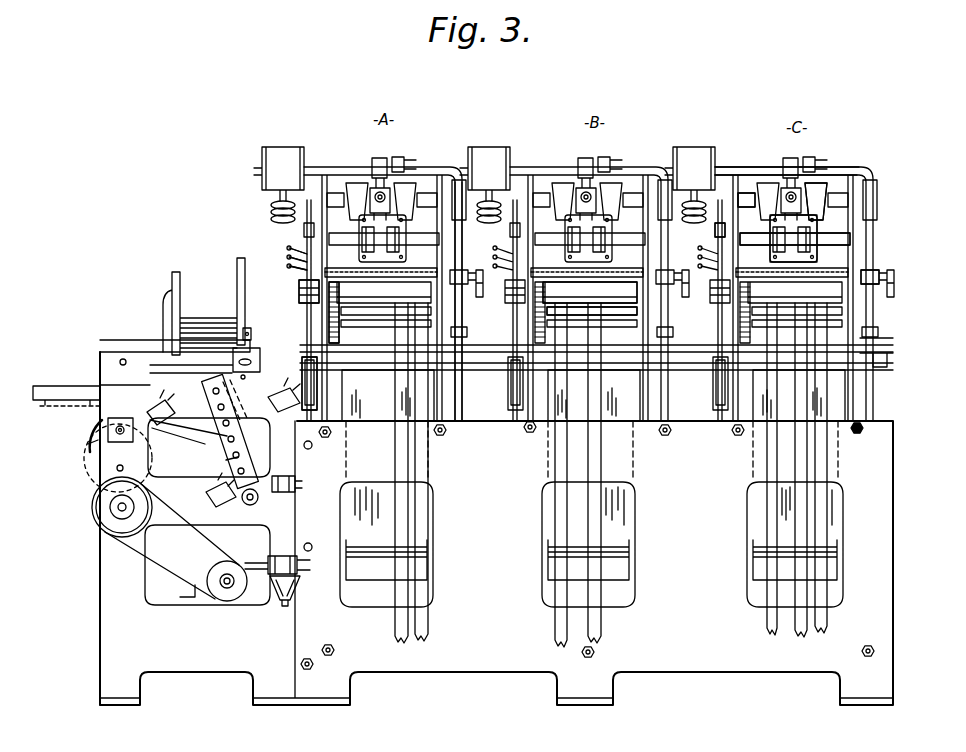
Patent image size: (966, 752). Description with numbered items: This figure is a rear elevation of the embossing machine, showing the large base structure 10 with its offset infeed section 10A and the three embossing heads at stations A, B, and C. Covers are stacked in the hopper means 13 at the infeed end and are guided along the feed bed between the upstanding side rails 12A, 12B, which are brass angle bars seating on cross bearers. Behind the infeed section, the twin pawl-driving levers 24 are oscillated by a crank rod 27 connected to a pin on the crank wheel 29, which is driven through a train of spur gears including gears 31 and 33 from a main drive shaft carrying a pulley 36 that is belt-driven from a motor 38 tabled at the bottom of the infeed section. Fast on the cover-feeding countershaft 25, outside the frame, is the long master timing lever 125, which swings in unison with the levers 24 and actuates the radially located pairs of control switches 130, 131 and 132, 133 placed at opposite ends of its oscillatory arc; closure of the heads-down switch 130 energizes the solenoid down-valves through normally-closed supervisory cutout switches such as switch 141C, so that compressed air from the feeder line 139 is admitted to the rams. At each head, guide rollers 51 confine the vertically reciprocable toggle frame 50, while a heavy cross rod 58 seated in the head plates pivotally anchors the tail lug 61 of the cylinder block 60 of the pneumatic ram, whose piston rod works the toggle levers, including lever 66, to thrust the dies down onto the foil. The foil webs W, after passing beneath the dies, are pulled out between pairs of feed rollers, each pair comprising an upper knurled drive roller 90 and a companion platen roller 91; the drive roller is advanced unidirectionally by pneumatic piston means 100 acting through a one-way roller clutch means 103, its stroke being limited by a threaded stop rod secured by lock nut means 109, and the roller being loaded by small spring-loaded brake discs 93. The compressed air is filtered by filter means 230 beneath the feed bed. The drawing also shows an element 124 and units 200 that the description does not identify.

The base structure 10 is at (492, 549).
The offset infeed section 10A is at (218, 635).
The upstanding side rail 12A is at (893, 342).
The upstanding side rail 12B is at (131, 340).
The cover-stacking hopper means 13 is at (207, 279).
The twin levers 24 is at (237, 430).
The countershaft 25 is at (258, 499).
The crank rod 27 is at (190, 430).
The crank wheel 29 is at (86, 447).
The spur gear 31 is at (88, 438).
The spur gear 33 is at (96, 475).
The pulley 36 is at (93, 510).
The motor 38 is at (212, 576).
The toggle frame 50 is at (773, 166).
The guide rollers 51 is at (750, 190).
The cross rod 58 is at (800, 238).
The cylinder block 60 is at (818, 259).
The tail lug 61 is at (716, 232).
The toggle lever 66 is at (824, 190).
The knurled drive roller 90 is at (550, 322).
The presser roller 91 is at (626, 313).
The brake discs 93 is at (339, 341).
The pneumatic piston means 100 is at (317, 403).
The one-way roller clutch means 103 is at (299, 290).
The lock nut means 109 is at (288, 254).
The link 124 is at (146, 377).
The timing lever 125 is at (231, 463).
The control switch 130 is at (297, 482).
The control switch 131 is at (290, 386).
The control switch 132 is at (206, 500).
The control switch 133 is at (150, 408).
The feeder line 139 is at (459, 406).
The supervisory cutout switch 141C is at (900, 273).
The supply unit 200 is at (288, 146).
The filter means 230 is at (280, 603).
The webs W is at (815, 647).